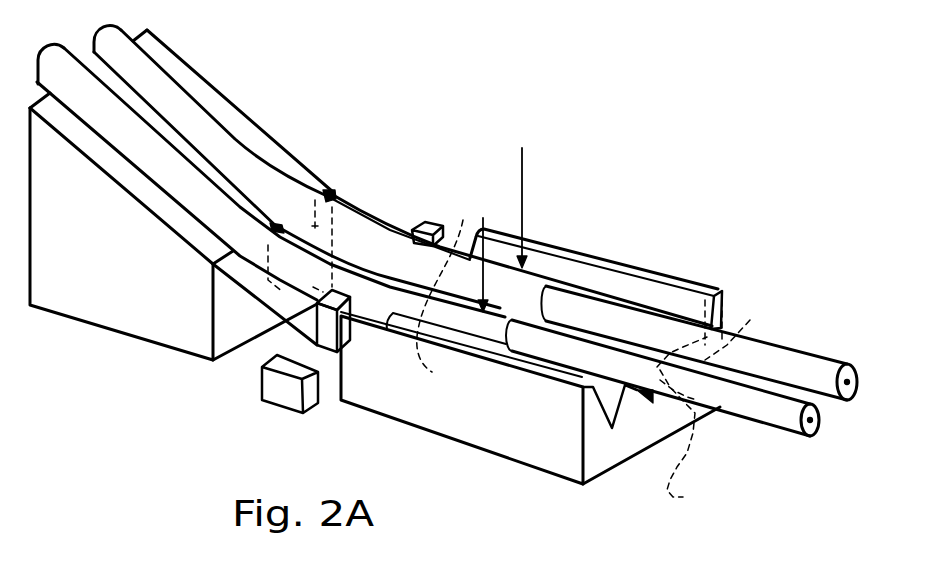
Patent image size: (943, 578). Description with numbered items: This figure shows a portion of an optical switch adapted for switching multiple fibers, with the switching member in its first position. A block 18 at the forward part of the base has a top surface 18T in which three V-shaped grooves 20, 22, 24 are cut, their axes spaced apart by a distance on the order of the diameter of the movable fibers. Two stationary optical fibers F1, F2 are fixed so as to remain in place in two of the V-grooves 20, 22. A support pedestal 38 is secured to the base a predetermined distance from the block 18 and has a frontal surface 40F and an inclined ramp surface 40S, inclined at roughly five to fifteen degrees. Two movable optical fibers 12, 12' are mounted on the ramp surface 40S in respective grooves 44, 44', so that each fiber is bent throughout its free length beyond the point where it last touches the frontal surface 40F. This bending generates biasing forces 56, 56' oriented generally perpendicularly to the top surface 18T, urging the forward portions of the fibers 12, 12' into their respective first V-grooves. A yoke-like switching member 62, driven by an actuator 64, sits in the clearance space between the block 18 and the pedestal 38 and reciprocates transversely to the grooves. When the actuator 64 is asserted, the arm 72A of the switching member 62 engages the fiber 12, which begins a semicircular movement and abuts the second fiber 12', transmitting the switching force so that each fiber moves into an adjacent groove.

The movable optical fiber 12 is at (403, 176).
The second movable optical fiber 12' is at (271, 180).
The block 18 is at (702, 278).
The top surface of the block 18T is at (640, 273).
The V-shaped groove 20 is at (750, 320).
The V-shaped groove 22 is at (676, 494).
The V-shaped groove 24 is at (606, 400).
The support pedestal 38 is at (145, 286).
The frontal surface of the pedestal 40F is at (233, 354).
The ramp surface 40S is at (217, 100).
The groove 44 is at (364, 228).
The groove 44' is at (286, 298).
The biasing force direction 56 is at (554, 208).
The biasing force direction 56' is at (426, 307).
The switching member 62 is at (455, 222).
The actuator 64 is at (280, 392).
The first arm of the switching member 72A is at (442, 222).
The stationary optical fiber F1 is at (813, 360).
The stationary optical fiber F2 is at (778, 416).